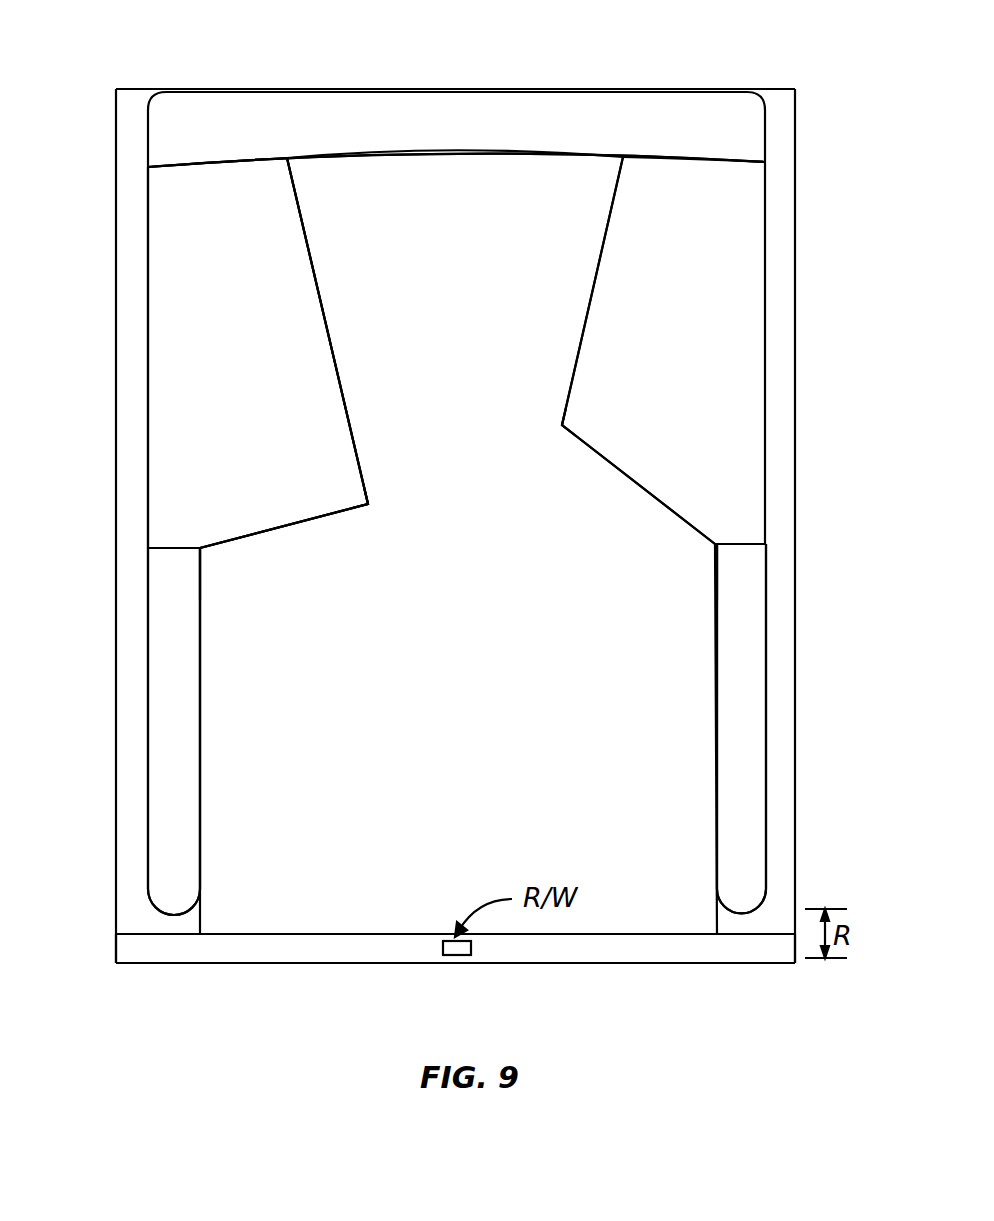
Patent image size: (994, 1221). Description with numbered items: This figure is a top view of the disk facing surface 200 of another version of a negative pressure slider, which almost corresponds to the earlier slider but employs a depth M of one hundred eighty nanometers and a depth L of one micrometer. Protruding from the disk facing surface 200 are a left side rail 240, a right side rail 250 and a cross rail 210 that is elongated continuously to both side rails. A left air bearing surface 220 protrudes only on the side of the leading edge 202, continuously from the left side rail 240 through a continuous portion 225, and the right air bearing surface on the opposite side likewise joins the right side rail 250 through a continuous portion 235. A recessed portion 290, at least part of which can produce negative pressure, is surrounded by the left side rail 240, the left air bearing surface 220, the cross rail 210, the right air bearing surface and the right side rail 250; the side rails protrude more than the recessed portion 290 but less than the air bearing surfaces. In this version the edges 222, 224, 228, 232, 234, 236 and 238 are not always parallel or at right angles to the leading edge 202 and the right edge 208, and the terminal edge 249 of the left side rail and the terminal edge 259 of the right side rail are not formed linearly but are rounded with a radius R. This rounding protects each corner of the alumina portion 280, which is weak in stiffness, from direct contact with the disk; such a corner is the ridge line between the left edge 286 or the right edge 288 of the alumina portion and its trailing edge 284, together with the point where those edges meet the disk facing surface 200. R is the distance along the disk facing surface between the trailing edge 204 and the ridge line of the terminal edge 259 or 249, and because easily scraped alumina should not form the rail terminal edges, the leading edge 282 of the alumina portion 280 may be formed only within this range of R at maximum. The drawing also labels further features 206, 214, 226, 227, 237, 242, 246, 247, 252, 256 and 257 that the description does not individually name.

The disk facing surface 200 is at (716, 44).
The leading edge 202 is at (465, 89).
The trailing edge 204 is at (412, 966).
The left side wall 206 is at (116, 486).
The right edge 208 is at (795, 463).
The cross rail 210 is at (480, 137).
The arcuate edge 214 is at (455, 157).
The left air bearing surface 220 is at (280, 387).
The edge 222 is at (245, 163).
The edge 224 is at (310, 522).
The continuous portion 225 is at (163, 548).
The left edge of cavity 226 is at (148, 337).
The corner 227 is at (372, 504).
The edge 228 is at (348, 423).
The edge 232 is at (710, 160).
The edge 234 is at (605, 458).
The continuous portion 235 is at (750, 543).
The edge 236 is at (764, 405).
The corner 237 is at (562, 425).
The edge 238 is at (592, 300).
The left side rail 240 is at (200, 745).
The pocket top corner 242 is at (200, 560).
The pocket outer wall 246 is at (148, 778).
The pocket inner wall 247 is at (200, 680).
The terminal edge of the left side rail 249 is at (175, 915).
The right side rail 250 is at (766, 741).
The pocket top corner 252 is at (720, 560).
The pocket outer wall 256 is at (766, 770).
The pocket inner wall 257 is at (717, 680).
The terminal edge of the right side rail 259 is at (740, 918).
The alumina portion 280 is at (550, 948).
The leading edge of the alumina portion 282 is at (782, 932).
The trailing edge of the alumina portion 284 is at (665, 963).
The left edge of the alumina portion 286 is at (116, 948).
The right edge of the alumina portion 288 is at (800, 940).
The recessed portion 290 is at (485, 662).